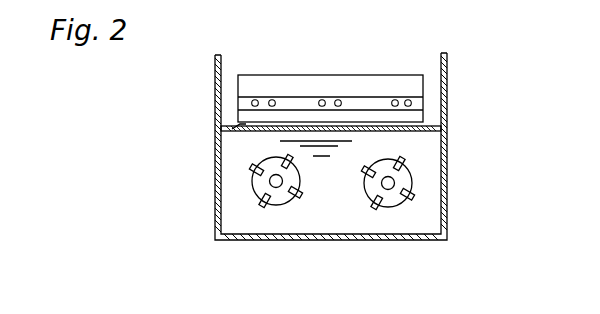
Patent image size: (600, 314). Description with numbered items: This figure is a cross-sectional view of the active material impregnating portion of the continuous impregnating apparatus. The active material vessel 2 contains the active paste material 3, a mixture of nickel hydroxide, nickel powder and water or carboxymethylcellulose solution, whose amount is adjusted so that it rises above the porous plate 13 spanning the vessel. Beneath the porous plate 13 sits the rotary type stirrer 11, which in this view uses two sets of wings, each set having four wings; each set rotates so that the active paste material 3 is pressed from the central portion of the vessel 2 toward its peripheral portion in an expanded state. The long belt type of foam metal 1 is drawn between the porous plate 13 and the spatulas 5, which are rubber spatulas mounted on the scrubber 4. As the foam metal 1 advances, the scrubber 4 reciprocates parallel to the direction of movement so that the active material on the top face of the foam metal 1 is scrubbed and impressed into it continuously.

The foam metal 1 is at (232, 129).
The active material vessel 2 is at (350, 240).
The active paste material 3 is at (247, 220).
The scrubber 4 is at (408, 83).
The spatulas 5 is at (405, 117).
The rotary type stirrer 11 is at (403, 174).
The porous plate 13 is at (413, 133).